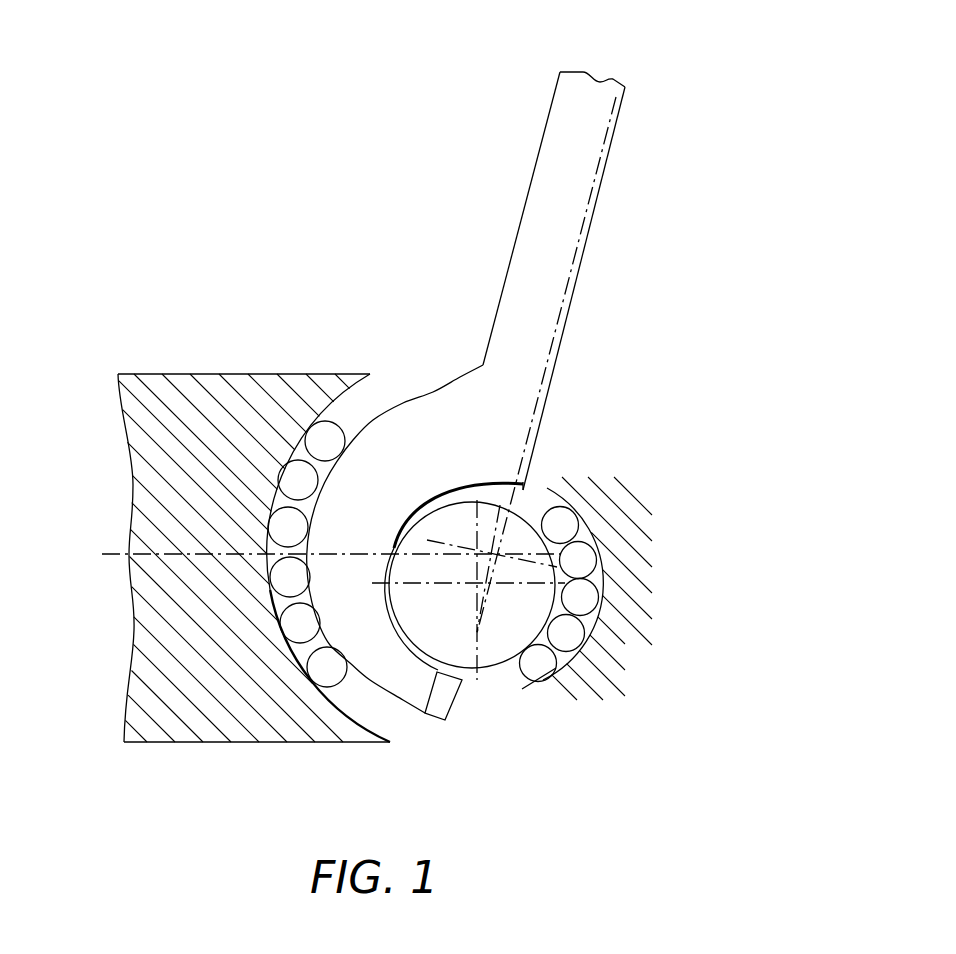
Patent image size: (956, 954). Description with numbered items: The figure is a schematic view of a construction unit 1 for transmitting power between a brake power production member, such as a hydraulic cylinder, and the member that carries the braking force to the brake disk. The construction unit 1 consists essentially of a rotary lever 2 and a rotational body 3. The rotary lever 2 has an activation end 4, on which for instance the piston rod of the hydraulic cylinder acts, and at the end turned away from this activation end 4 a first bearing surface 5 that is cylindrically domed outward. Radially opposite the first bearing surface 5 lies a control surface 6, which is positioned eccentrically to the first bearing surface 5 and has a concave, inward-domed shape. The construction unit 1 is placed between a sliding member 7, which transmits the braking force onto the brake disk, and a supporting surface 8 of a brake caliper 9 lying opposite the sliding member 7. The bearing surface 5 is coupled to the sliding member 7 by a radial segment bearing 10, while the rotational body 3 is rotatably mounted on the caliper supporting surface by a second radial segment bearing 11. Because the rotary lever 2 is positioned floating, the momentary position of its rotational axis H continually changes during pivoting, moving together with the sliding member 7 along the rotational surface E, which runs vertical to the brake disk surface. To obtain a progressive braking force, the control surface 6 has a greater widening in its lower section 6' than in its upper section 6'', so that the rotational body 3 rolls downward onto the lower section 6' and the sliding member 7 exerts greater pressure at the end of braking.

The construction unit 1 is at (477, 722).
The rotary lever 2 is at (553, 231).
The rotational body 3 is at (502, 638).
The activation end 4 is at (590, 78).
The first bearing surface 5 is at (364, 414).
The control surface 6 is at (491, 437).
The lower section of the control surface 6' is at (492, 515).
The upper section of the control surface 6'' is at (431, 735).
The sliding member 7 is at (180, 725).
The supporting surface 8 is at (593, 518).
The brake caliper 9 is at (627, 656).
The radial segment bearing 10 is at (313, 670).
The second radial segment bearing 11 is at (540, 663).
The rotational axis H is at (512, 537).
The rotational surface E is at (116, 540).